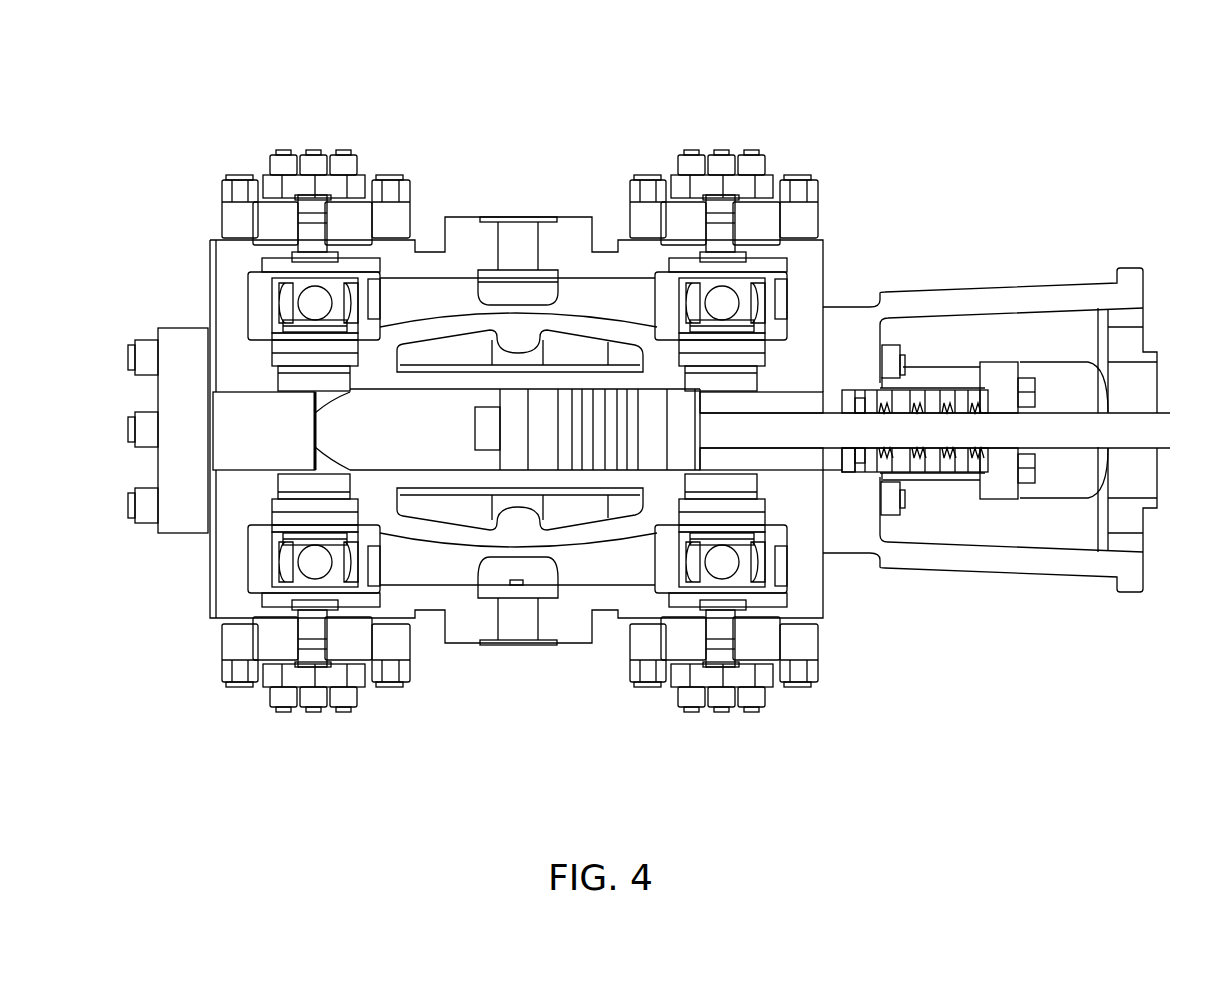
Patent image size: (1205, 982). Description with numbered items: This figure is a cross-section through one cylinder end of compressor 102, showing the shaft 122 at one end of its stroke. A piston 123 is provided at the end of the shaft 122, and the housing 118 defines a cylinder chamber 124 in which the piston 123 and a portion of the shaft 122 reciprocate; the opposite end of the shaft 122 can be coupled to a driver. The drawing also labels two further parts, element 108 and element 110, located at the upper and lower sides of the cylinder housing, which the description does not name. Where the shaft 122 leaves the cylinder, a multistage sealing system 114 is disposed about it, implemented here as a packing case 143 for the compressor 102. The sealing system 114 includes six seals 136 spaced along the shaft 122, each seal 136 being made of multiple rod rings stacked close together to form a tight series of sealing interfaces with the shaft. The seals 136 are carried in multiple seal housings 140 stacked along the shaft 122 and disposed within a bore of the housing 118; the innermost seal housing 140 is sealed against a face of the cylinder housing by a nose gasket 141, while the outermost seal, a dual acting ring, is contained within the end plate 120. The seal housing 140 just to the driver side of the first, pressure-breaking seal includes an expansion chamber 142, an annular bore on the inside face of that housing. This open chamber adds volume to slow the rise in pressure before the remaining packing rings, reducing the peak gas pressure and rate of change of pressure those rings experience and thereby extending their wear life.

The compressor 102 is at (452, 158).
The upper bearing 108 is at (710, 285).
The lower bearing 110 is at (698, 577).
The multistage sealing system 114 is at (926, 571).
The housing 118 is at (232, 302).
The end plate 120 is at (1045, 374).
The shaft 122 is at (770, 443).
The piston 123 is at (520, 460).
The cylinder chamber 124 is at (398, 443).
The seal 136 is at (1011, 354).
The seal housing 140 is at (939, 536).
The nose gasket 141 is at (842, 473).
The expansion chamber 142 is at (886, 386).
The packing case 143 is at (997, 332).